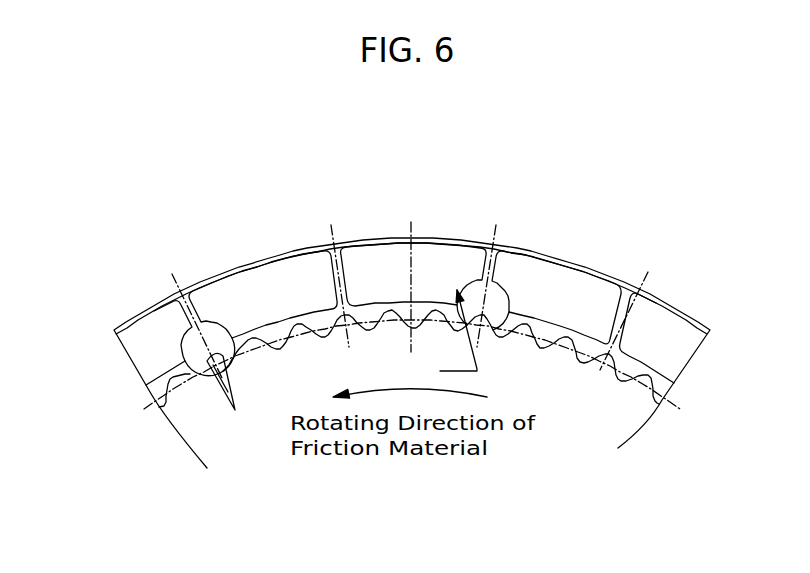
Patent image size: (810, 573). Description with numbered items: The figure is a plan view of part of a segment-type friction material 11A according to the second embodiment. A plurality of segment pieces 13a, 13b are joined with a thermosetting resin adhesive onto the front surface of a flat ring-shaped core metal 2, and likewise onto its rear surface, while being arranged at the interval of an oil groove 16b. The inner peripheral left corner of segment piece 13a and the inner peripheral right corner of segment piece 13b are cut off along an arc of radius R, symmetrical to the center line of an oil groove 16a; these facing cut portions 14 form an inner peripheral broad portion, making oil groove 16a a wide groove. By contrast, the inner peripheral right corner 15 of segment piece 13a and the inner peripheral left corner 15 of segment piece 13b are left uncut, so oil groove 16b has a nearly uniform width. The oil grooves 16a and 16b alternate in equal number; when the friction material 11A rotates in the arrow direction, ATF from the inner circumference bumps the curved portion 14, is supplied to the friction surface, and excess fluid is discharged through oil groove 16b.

The core metal 2 is at (197, 268).
The segment-type friction material 11A is at (650, 220).
The segment piece 13a is at (230, 283).
The segment piece 13b is at (135, 330).
The cut portion 14 is at (455, 283).
The inner peripheral corner 15 is at (300, 262).
The oil groove 16a is at (178, 293).
The oil groove 16b is at (333, 262).